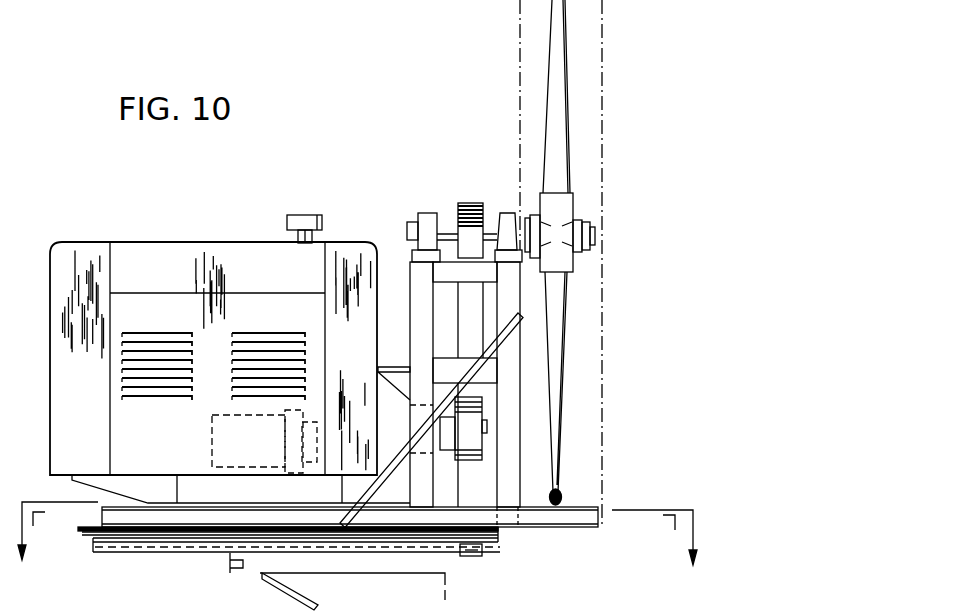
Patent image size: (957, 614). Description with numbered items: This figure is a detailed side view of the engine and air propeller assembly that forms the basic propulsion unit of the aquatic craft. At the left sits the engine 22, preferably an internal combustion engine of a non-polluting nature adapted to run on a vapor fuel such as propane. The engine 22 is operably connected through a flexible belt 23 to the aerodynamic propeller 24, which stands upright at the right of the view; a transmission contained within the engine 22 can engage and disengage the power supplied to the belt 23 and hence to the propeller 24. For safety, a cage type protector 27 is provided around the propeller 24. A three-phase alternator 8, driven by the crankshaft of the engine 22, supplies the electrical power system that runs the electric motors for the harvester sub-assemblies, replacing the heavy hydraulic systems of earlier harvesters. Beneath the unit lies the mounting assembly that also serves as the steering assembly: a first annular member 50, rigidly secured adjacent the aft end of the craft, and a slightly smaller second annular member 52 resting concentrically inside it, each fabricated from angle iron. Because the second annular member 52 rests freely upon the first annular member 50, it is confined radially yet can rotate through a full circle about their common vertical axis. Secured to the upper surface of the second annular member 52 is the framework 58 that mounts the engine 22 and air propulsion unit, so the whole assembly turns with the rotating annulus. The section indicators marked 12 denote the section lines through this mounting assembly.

The three-phase alternator 8 is at (212, 430).
The section line 12 is at (360, 551).
The engine 22 is at (168, 242).
The flexible belt 23 is at (468, 318).
The aerodynamic propeller 24 is at (567, 137).
The cage type protector 27 is at (605, 213).
The first annular member 50 is at (110, 540).
The second annular member 52 is at (86, 527).
The framework 58 is at (525, 517).